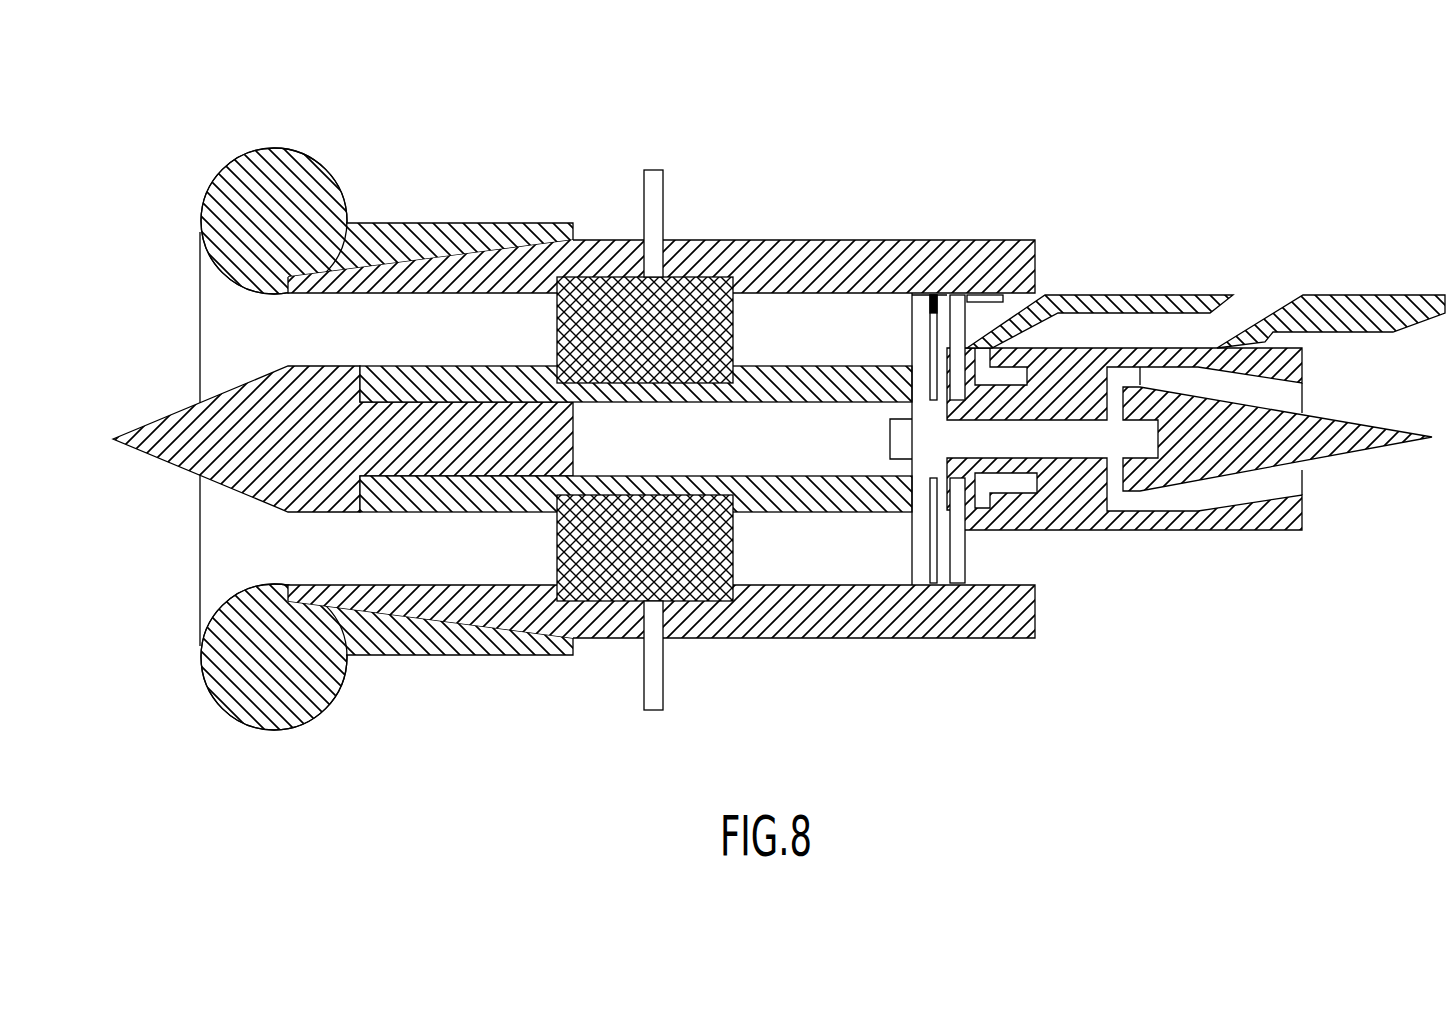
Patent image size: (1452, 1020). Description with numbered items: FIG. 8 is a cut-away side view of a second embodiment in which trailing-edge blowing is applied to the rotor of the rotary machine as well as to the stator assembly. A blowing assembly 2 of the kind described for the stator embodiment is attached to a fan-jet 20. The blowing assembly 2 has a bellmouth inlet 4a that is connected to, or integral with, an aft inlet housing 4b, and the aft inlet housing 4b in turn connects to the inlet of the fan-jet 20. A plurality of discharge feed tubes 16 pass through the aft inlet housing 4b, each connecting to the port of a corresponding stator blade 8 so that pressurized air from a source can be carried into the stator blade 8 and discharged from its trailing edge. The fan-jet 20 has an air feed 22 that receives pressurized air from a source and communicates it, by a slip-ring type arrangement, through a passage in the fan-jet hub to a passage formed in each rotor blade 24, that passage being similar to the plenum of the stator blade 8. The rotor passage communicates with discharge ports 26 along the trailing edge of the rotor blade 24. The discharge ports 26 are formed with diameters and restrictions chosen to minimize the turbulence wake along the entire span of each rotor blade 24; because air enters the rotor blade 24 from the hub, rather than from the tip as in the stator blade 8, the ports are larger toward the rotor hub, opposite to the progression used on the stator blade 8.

The blowing assembly 2 is at (472, 156).
The bellmouth inlet 4a is at (192, 144).
The aft inlet housing 4b is at (870, 240).
The stator blade 8 is at (706, 279).
The discharge feed tube 16 is at (663, 215).
The fan-jet 20 is at (1166, 544).
The air feed 22 is at (1060, 268).
The rotor blade 24 is at (995, 263).
The discharge port 26 is at (956, 345).